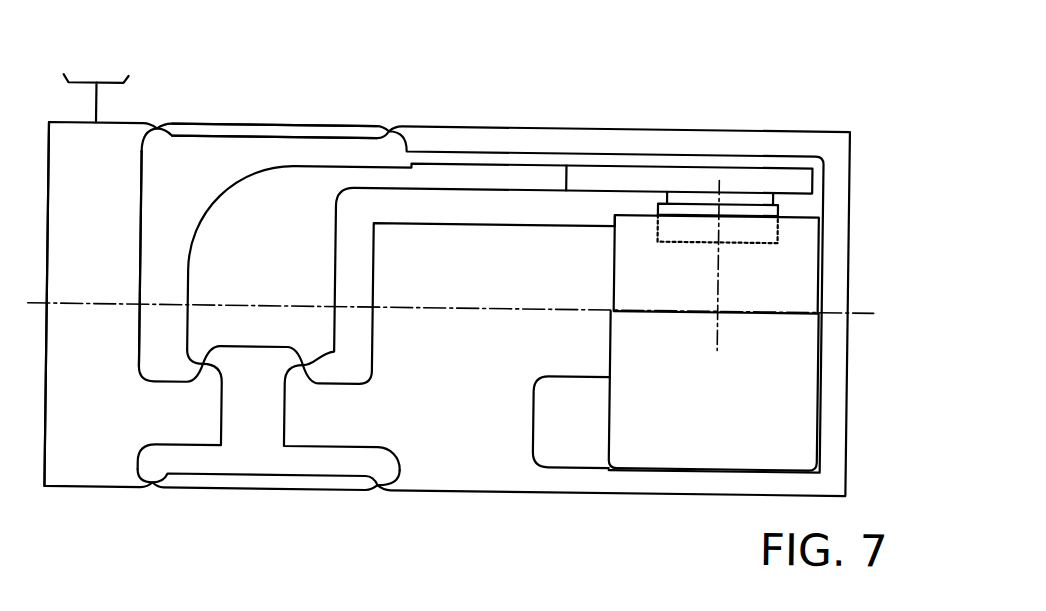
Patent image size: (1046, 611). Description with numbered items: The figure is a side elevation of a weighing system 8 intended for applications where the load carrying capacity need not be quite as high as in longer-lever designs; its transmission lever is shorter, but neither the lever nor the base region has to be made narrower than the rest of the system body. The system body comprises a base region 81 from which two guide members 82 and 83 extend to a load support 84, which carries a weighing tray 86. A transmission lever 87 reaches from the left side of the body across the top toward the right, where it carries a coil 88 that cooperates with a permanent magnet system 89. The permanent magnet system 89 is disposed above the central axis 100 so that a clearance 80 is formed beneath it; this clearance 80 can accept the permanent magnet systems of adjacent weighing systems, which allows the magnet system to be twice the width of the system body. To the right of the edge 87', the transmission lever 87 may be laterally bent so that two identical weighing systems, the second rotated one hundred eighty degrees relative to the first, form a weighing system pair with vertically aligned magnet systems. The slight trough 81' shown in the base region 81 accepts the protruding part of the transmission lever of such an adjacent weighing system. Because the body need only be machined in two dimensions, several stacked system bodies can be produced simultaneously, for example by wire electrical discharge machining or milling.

The weighing system 8 is at (484, 86).
The clearance 80 is at (715, 325).
The base region 81 is at (470, 308).
The trough 81' is at (576, 460).
The guide member 82 is at (323, 122).
The guide member 83 is at (272, 482).
The load support 84 is at (91, 467).
The weighing tray 86 is at (125, 79).
The transmission lever 87 is at (476, 280).
The edge 87' is at (546, 140).
The coil 88 is at (778, 204).
The permanent magnet system 89 is at (807, 261).
The central axis 100 is at (868, 310).